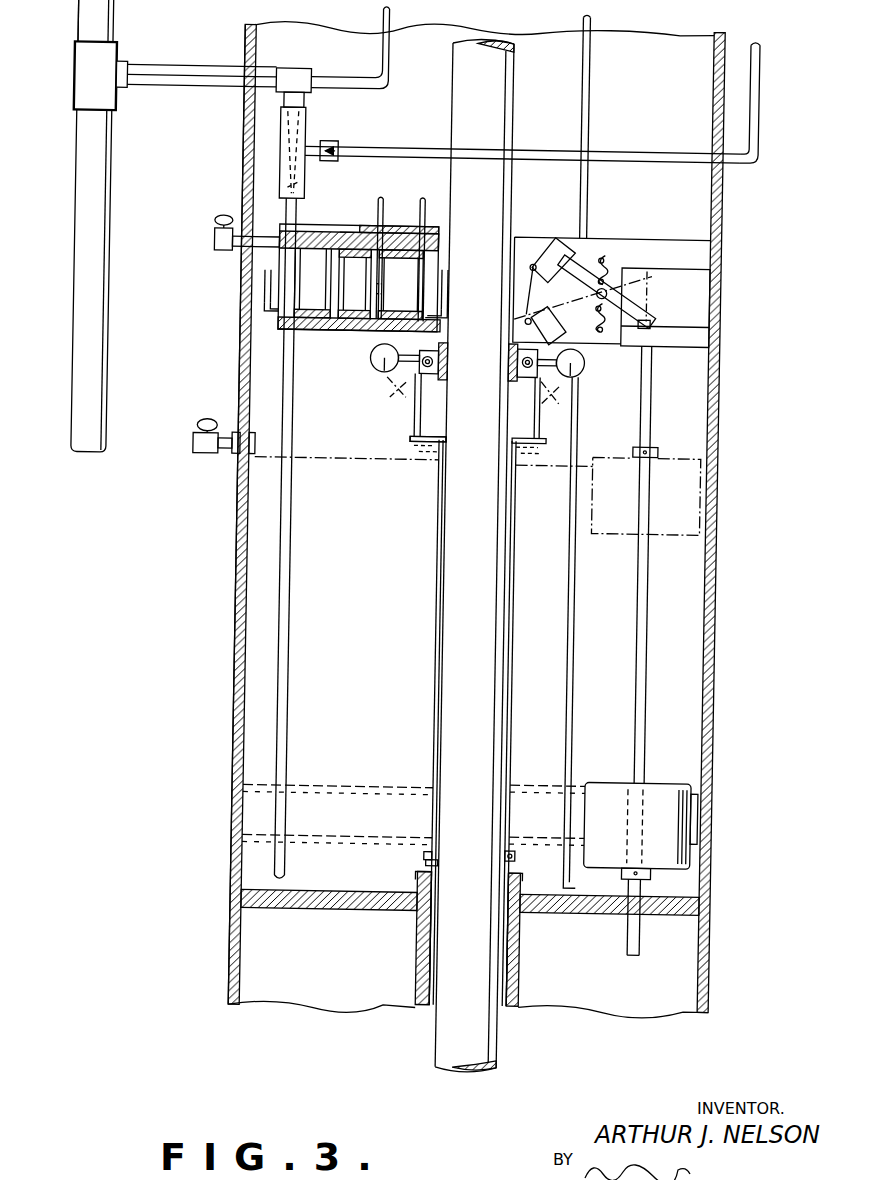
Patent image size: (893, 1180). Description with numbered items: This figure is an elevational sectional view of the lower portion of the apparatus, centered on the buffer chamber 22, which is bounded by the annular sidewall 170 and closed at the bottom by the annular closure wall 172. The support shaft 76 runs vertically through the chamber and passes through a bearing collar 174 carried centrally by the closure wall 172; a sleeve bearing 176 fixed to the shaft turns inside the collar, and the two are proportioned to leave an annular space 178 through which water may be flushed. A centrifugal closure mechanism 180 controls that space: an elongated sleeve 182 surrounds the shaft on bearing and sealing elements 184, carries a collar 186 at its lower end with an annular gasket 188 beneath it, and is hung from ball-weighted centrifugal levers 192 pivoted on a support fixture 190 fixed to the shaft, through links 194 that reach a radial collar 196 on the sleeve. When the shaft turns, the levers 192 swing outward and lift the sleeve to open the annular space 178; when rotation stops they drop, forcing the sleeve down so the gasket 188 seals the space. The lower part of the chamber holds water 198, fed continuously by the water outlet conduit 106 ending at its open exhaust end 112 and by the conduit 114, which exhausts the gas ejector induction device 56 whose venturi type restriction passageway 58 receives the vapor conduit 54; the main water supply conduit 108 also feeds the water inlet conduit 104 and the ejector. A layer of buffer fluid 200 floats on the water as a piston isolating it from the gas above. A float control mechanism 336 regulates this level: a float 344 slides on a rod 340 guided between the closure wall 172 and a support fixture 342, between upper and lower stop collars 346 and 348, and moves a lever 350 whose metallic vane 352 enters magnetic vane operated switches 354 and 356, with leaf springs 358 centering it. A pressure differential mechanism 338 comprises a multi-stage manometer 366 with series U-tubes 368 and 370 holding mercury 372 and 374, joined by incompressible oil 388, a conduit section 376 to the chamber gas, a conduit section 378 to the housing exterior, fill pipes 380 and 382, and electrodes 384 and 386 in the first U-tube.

The buffer chamber 22 is at (727, 665).
The conduit 54 is at (762, 87).
The gas ejector induction device 56 is at (308, 121).
The venturi type restriction passageway 58 is at (302, 185).
The support shaft 76 is at (516, 100).
The water inlet conduit 104 is at (387, 61).
The water outlet conduit 106 is at (591, 111).
The main water supply conduit 108 is at (113, 300).
The open exhaust end 112 is at (593, 638).
The conduit 114 is at (301, 566).
The annular sidewall 170 is at (724, 550).
The closure wall 172 is at (560, 912).
The bearing collar 174 is at (535, 982).
The sleeve bearing 176 is at (515, 1008).
The annular space 178 is at (440, 1010).
The centrifugal closure mechanism 180 is at (392, 412).
The elongated sleeve 182 is at (524, 600).
The bearing and sealing elements 184 is at (450, 442).
The collar 186 is at (517, 855).
The annular gasket 188 is at (448, 866).
The support fixture 190 is at (425, 351).
The ball-weighted centrifugal levers 192 is at (376, 360).
The links 194 is at (422, 393).
The collar 196 is at (416, 436).
The water 198 is at (258, 850).
The buffer fluid 200 is at (335, 792).
The float control mechanism 336 is at (631, 280).
The pressure differential mechanism 338 is at (367, 210).
The rod 340 is at (656, 606).
The support fixture 342 is at (700, 251).
The float 344 is at (690, 790).
The upper stop collar 346 is at (656, 451).
The lower stop collar 348 is at (652, 880).
The lever 350 is at (625, 343).
The metallic vane 352 is at (565, 240).
The magnetic vane operated switch 354 is at (540, 318).
The magnetic vane operated switch 356 is at (536, 262).
The leaf springs 358 is at (605, 253).
The multi-stage manometer 366 is at (316, 234).
The first U-tube 368 is at (445, 263).
The second U-tube 370 is at (303, 296).
The mercury 372 is at (449, 284).
The mercury 374 is at (340, 298).
The conduit section 376 is at (443, 237).
The conduit section 378 is at (243, 253).
The fill pipe 380 is at (455, 295).
The fill pipe 382 is at (268, 291).
The electrode 384 is at (427, 205).
The electrode 386 is at (385, 214).
The incompressible oil 388 is at (344, 233).